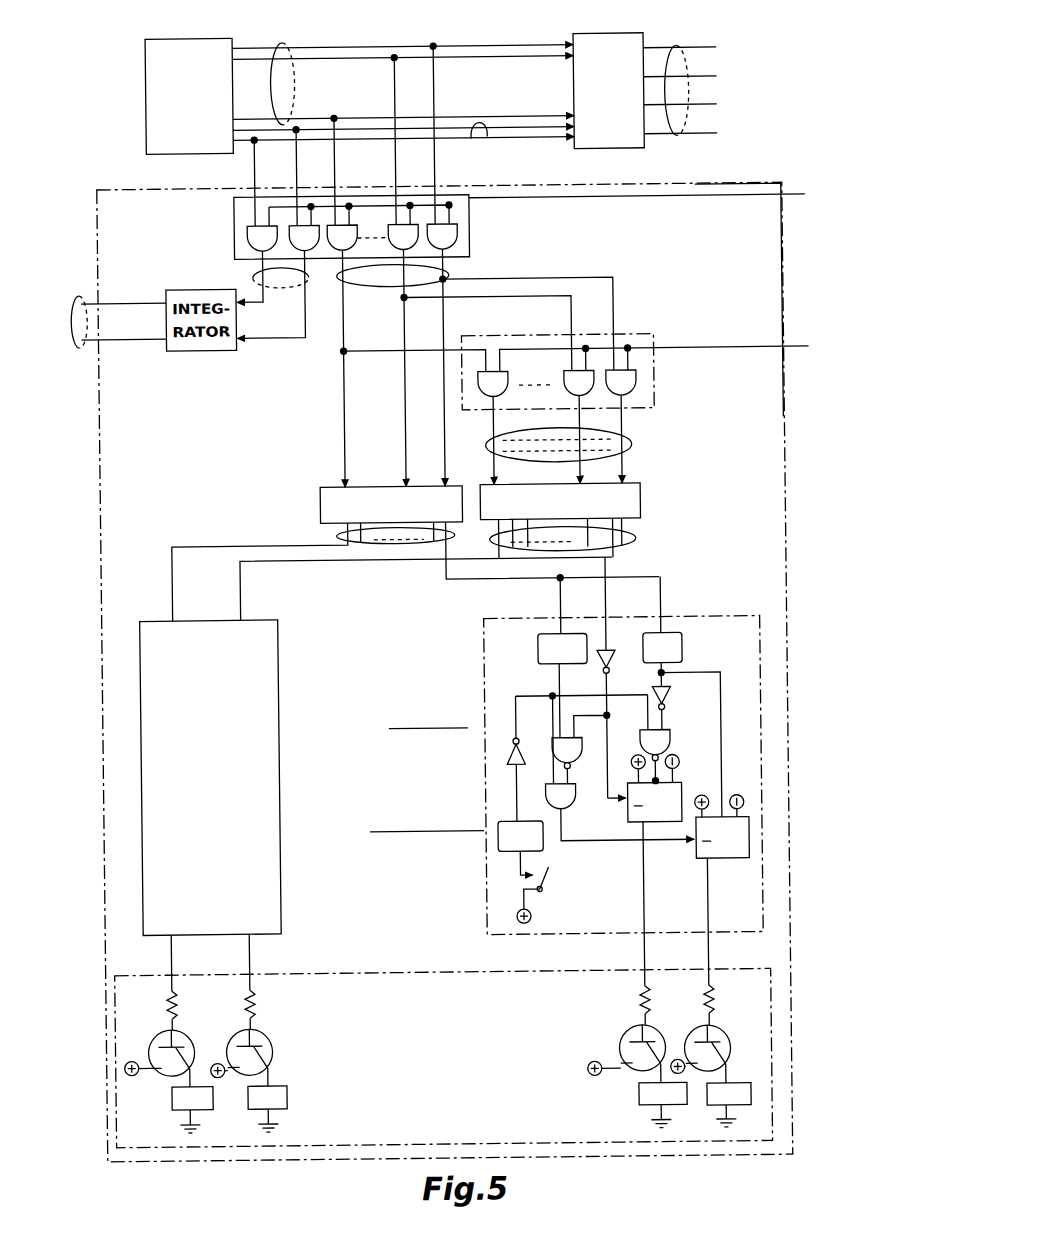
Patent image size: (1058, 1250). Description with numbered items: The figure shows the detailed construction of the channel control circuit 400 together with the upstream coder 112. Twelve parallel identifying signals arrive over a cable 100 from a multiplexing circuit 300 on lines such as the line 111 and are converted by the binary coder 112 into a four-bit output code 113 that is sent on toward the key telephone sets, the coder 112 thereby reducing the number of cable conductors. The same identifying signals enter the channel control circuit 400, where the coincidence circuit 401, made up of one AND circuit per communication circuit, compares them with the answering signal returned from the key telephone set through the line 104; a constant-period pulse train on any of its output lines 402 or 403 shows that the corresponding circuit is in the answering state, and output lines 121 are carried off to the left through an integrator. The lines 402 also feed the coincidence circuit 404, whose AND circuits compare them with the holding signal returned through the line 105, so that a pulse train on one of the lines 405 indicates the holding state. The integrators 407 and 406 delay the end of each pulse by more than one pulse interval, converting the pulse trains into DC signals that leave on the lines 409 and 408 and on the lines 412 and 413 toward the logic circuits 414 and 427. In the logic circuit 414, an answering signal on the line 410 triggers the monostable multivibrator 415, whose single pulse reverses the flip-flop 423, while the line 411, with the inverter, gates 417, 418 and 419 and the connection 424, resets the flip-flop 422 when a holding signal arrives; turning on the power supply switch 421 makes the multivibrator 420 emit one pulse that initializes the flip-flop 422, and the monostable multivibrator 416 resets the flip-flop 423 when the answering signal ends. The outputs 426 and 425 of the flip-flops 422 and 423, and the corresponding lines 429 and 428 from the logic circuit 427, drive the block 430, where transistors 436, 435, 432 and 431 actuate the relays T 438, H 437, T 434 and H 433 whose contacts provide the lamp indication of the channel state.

The multiplexing circuit 300 is at (236, 37).
The transmission lines 100 is at (296, 46).
The coder 112 is at (648, 25).
The output code 113 is at (683, 48).
The line 111 is at (493, 140).
The channel control circuit 400 is at (118, 172).
The line 104 is at (786, 186).
The line 105 is at (800, 352).
The coincidence circuit 401 is at (474, 233).
The output lines 402 is at (453, 276).
The output lines 403 is at (256, 278).
The coincidence circuit 404 is at (657, 336).
The output lines 405 is at (634, 446).
The integrator 406 is at (642, 503).
The integrator 407 is at (322, 486).
The lines 408 is at (637, 541).
The lines 409 is at (338, 537).
The line 410 is at (452, 581).
The line 411 is at (607, 596).
The line 412 is at (173, 544).
The line 413 is at (328, 560).
The logic circuit 414 is at (744, 610).
The monostable multivibrator 415 is at (682, 651).
The monostable multivibrator 416 is at (538, 653).
The NAND gate 417 is at (670, 743).
The NAND gate 418 is at (572, 766).
The AND gate 419 is at (562, 810).
The multivibrator 420 is at (541, 851).
The power supply switch 421 is at (545, 892).
The flip-flop 422 is at (682, 786).
The flip-flop 423 is at (732, 864).
The line 424 is at (721, 742).
The Q output 425 is at (708, 960).
The Q-bar output 426 is at (636, 958).
The logic circuit 427 is at (278, 710).
The line 428 is at (250, 960).
The line 429 is at (172, 961).
The block 430 is at (428, 964).
The transistor 431 is at (720, 1034).
The transistor 432 is at (620, 1032).
The relay H 433 is at (746, 1090).
The relay T 434 is at (634, 1094).
The transistor 435 is at (262, 1038).
The transistor 436 is at (182, 1034).
The relay H 437 is at (282, 1096).
The relay T 438 is at (166, 1096).
The output lines 121 is at (82, 346).